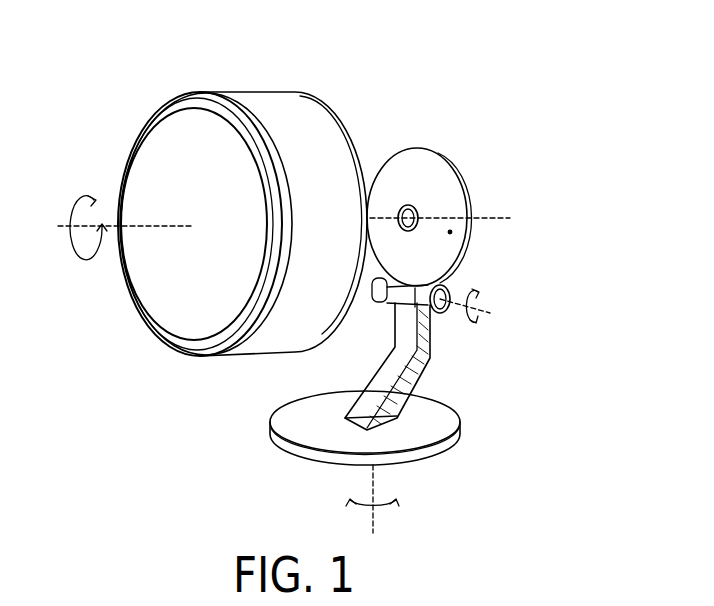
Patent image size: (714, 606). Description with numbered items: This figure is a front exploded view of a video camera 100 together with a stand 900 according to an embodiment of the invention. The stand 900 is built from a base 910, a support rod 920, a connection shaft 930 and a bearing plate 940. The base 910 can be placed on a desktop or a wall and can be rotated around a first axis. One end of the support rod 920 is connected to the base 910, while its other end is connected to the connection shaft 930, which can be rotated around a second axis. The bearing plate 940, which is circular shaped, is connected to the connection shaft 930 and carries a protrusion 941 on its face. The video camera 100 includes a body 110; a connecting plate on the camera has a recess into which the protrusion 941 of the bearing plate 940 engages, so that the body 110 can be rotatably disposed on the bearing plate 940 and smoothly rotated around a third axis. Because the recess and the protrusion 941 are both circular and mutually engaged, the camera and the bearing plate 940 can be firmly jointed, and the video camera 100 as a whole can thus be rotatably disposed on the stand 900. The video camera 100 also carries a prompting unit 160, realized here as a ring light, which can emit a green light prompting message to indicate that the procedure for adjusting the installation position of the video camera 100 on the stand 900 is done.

The video camera 100 is at (200, 213).
The body 110 is at (196, 147).
The prompting unit 160 is at (200, 357).
The stand 900 is at (460, 320).
The base 910 is at (438, 427).
The support rod 920 is at (427, 368).
The connection shaft 930 is at (445, 296).
The bearing plate 940 is at (466, 253).
The protrusion 941 is at (408, 205).